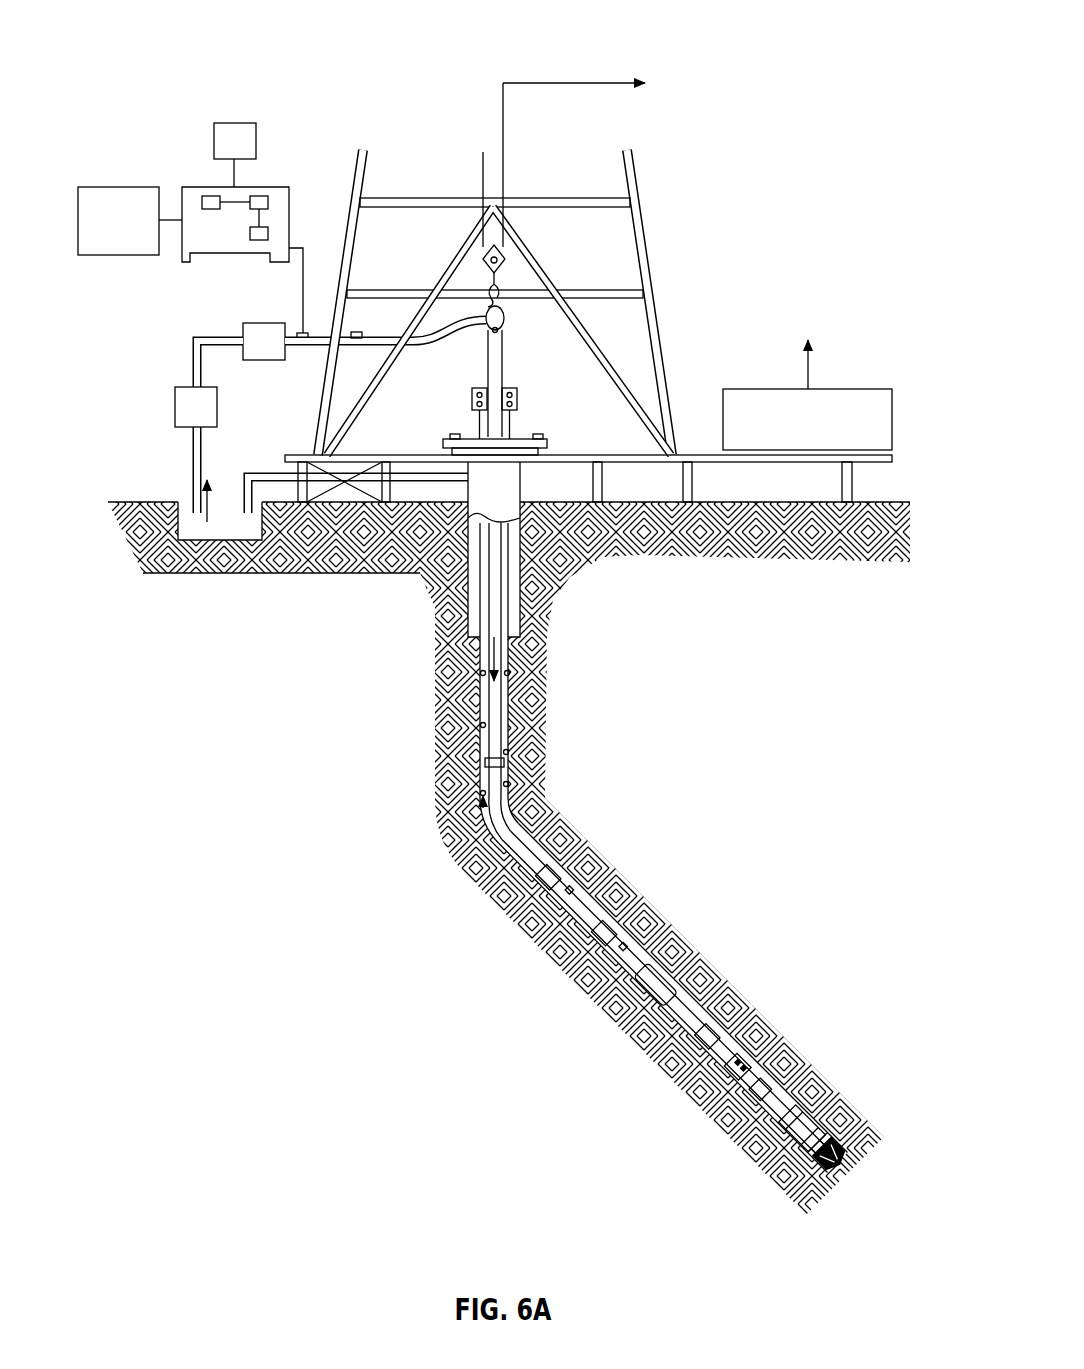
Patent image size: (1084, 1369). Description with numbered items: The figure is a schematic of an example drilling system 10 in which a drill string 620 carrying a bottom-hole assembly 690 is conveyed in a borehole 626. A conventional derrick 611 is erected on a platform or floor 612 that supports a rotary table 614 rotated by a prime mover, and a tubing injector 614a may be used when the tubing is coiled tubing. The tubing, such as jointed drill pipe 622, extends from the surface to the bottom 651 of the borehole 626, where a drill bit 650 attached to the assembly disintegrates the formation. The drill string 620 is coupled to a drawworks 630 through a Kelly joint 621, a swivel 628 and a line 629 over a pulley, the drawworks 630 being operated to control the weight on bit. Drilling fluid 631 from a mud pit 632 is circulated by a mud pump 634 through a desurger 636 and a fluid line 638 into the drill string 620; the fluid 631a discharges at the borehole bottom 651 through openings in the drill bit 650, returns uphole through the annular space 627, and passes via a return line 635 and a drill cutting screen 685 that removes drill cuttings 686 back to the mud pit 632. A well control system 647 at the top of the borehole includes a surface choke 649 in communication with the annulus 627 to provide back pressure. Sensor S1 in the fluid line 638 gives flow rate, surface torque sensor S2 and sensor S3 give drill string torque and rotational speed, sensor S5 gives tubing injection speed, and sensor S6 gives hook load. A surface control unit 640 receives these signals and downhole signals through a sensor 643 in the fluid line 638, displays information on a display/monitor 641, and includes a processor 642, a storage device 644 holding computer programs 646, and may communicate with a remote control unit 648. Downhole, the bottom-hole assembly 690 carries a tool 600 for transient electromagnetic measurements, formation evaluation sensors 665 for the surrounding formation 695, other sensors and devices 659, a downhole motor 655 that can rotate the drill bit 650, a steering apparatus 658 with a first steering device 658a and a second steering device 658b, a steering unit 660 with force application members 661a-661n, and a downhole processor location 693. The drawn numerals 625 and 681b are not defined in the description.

The drilling system 10 is at (168, 50).
The tool 600 is at (705, 1000).
The derrick 611 is at (655, 302).
The platform or floor 612 is at (676, 452).
The rotary table 614 is at (513, 437).
The tubing injector 614a is at (518, 402).
The drill string 620 is at (508, 700).
The Kelly joint 621 is at (503, 372).
The jointed drill pipe 622 is at (478, 718).
The casing 625 is at (542, 448).
The borehole 626 is at (512, 790).
The annular space 627 is at (535, 842).
The swivel 628 is at (482, 324).
The line 629 is at (505, 182).
The drawworks 630 is at (832, 389).
The drilling fluid 631 is at (181, 505).
The drilling fluid from the drilling tubular 631a is at (447, 652).
The source of drilling fluid (mud pit) 632 is at (218, 535).
The mud pump 634 is at (175, 405).
The return line 635 is at (366, 545).
The desurger 636 is at (243, 337).
The fluid line 638 is at (316, 349).
The surface control unit 640 is at (208, 186).
The display/monitor 641 is at (233, 122).
The processor 642 is at (210, 195).
The sensor 643 is at (301, 332).
The storage device 644 is at (260, 195).
The computer programs 646 is at (262, 241).
The well control system 647 is at (457, 407).
The remote control unit 648 is at (130, 256).
The surface choke 649 is at (533, 503).
The drill bit 650 is at (856, 1135).
The bottom of the borehole 651 is at (818, 1203).
The downhole motor 655 is at (587, 909).
The steering apparatus 658 is at (800, 1108).
The first steering device 658a is at (818, 1192).
The second steering device 658b is at (795, 1156).
The sensors and devices 659 is at (822, 1132).
The steering unit 660 is at (795, 1130).
The force application members 661a-661n is at (797, 1112).
The formation evaluation sensors 665 is at (695, 1047).
The return flow 681b is at (480, 820).
The drill cutting screen 685 is at (298, 560).
The drill cuttings 686 is at (507, 671).
The bottom-hole assembly 690 is at (746, 870).
The downhole processor location 693 is at (640, 993).
The formation 695 is at (782, 921).
The sensor S1 is at (360, 330).
The surface torque sensor S2 is at (545, 437).
The sensor S3 is at (455, 433).
The sensor S5 is at (505, 325).
The sensor S6 is at (505, 300).